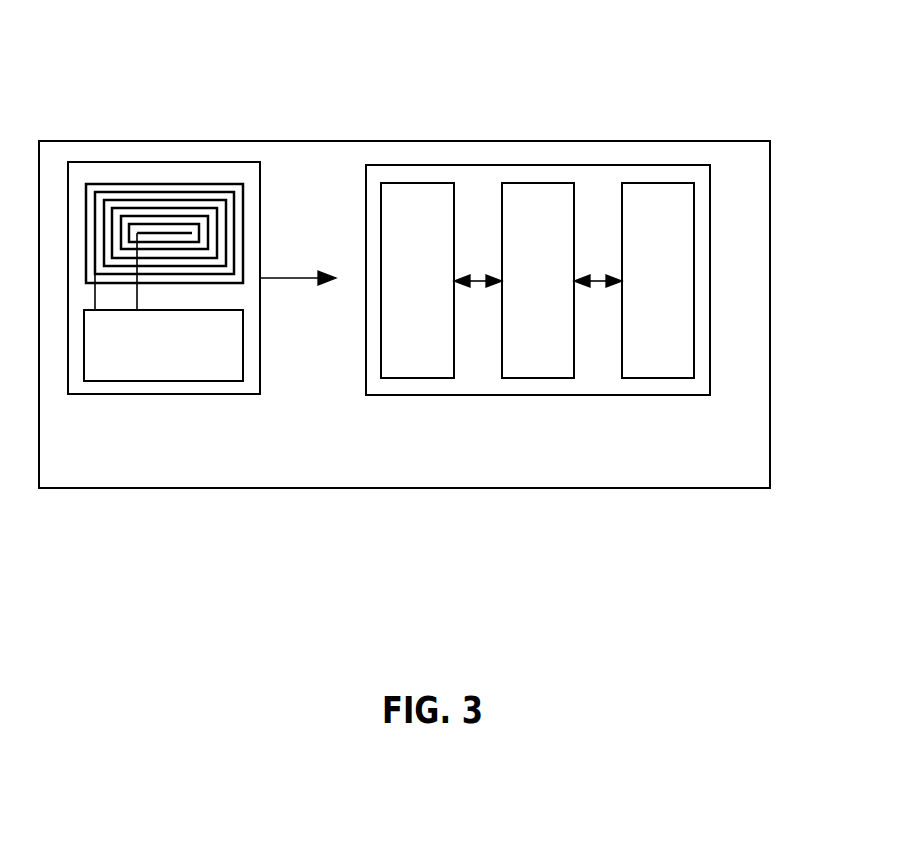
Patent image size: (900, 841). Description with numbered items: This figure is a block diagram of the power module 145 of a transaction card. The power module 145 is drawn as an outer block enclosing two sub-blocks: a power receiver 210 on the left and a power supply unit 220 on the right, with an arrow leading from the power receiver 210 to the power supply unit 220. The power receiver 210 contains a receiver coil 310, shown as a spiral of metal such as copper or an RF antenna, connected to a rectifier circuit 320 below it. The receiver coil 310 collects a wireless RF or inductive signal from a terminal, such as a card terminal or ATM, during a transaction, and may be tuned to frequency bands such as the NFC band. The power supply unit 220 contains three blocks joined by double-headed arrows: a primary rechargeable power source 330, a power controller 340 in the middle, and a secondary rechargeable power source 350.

The power module 145 is at (771, 237).
The power receiver 210 is at (167, 162).
The power supply unit 220 is at (710, 188).
The receiver coil 310 is at (197, 183).
The rectifier circuit 320 is at (165, 382).
The primary rechargeable power source 330 is at (418, 183).
The power controller 340 is at (535, 183).
The secondary rechargeable power source 350 is at (658, 183).